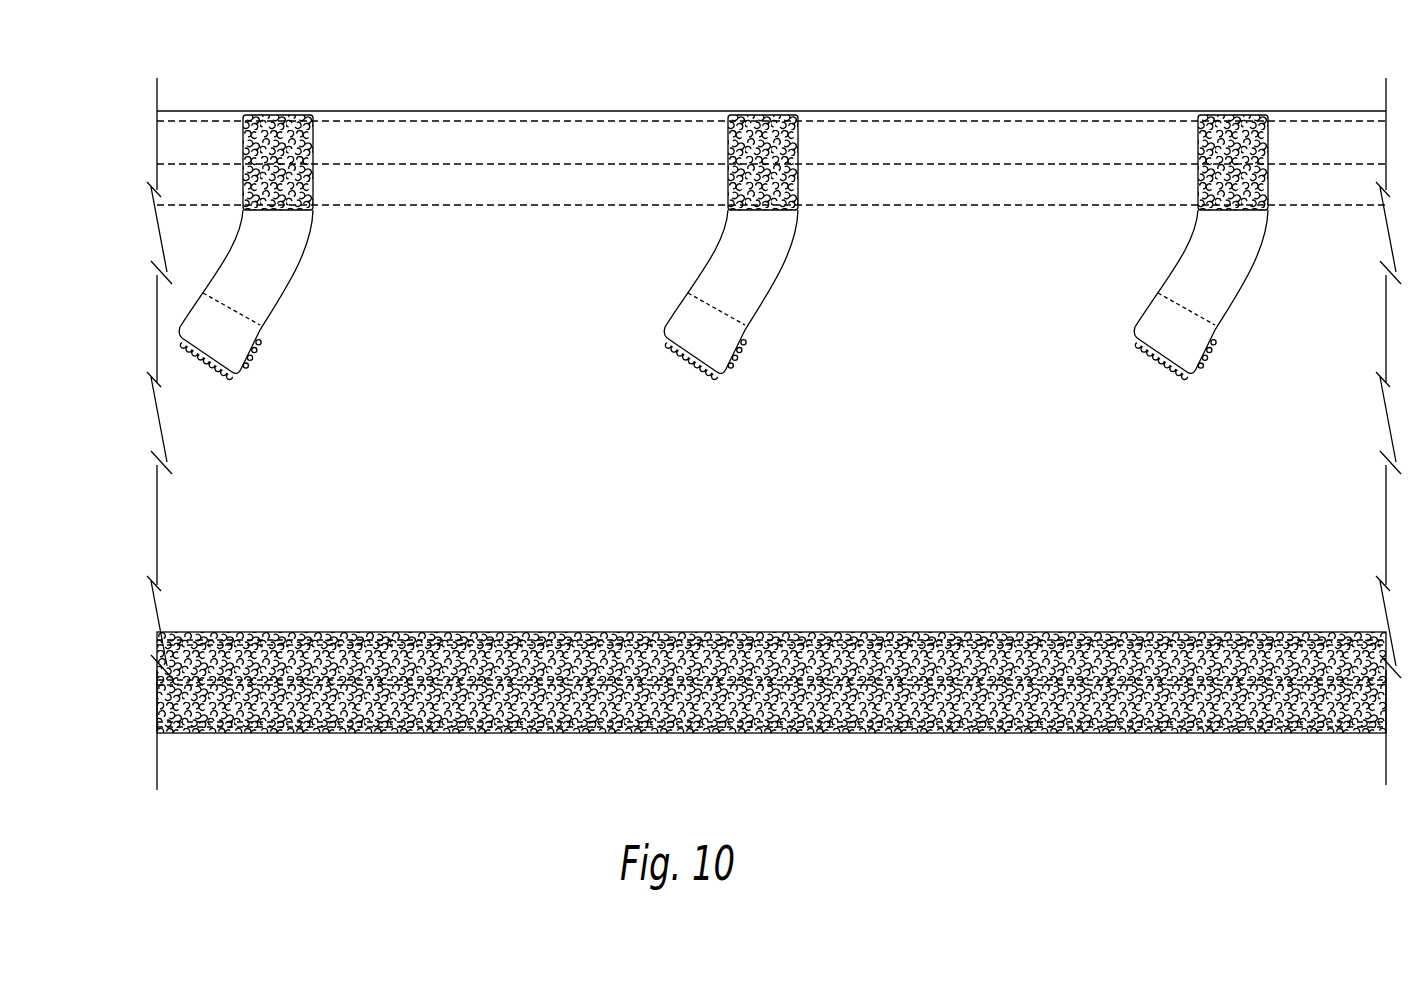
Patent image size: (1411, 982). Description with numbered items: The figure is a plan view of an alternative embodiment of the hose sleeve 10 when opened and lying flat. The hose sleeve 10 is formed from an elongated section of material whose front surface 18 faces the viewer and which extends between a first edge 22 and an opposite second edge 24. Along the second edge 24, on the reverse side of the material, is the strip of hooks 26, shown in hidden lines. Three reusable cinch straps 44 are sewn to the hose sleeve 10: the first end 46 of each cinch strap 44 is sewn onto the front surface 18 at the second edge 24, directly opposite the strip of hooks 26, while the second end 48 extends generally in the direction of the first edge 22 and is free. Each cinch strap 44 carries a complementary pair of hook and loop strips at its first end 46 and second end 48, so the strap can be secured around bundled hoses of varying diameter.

The hose sleeve 10 is at (137, 169).
The front surface 18 is at (853, 446).
The first edge 22 is at (461, 736).
The second edge 24 is at (512, 111).
The strip of hooks 26 is at (1062, 148).
The cinch strap 44 is at (270, 273).
The first end 46 is at (320, 212).
The second end 48 is at (263, 328).